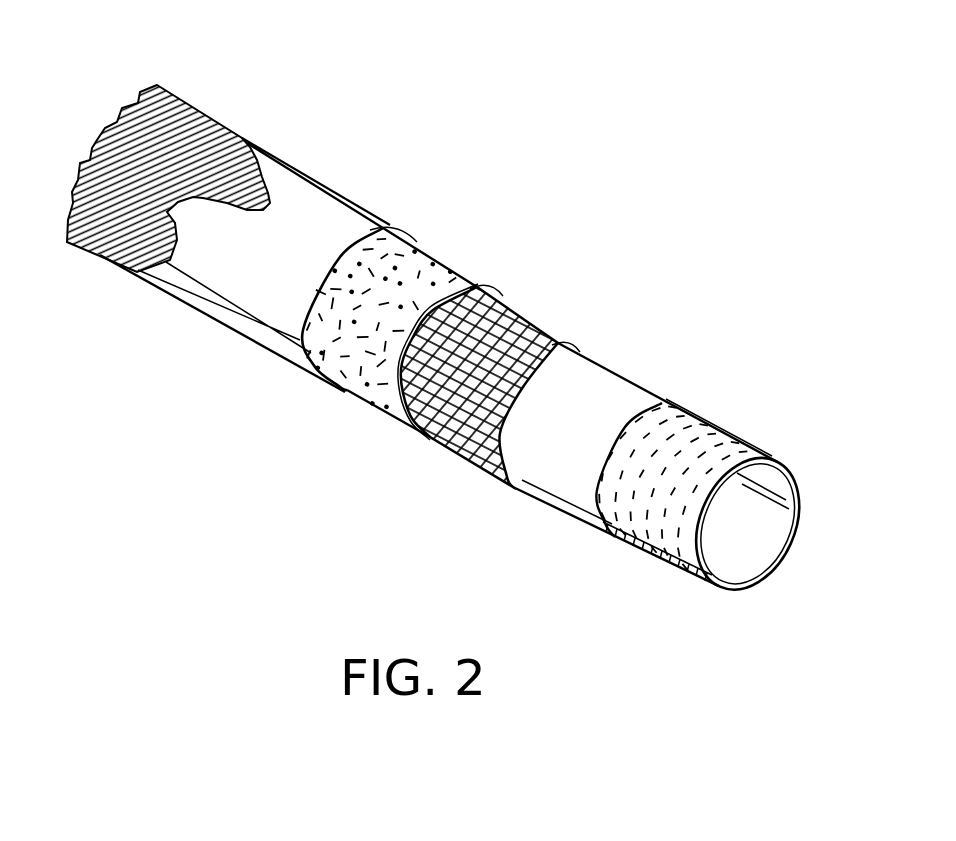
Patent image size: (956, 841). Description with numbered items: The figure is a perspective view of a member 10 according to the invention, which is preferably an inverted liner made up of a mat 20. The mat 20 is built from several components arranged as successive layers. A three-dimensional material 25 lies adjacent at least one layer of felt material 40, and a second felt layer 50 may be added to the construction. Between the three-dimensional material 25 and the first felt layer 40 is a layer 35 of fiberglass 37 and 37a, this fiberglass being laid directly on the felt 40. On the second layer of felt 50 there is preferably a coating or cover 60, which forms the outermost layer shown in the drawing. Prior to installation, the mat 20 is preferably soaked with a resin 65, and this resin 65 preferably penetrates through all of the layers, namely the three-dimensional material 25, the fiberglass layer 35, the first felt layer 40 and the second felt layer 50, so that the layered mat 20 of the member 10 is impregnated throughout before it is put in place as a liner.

The member 10 is at (585, 92).
The mat 20 is at (365, 421).
The three-dimensional material 25 is at (541, 312).
The layer of fiberglass 35 is at (437, 255).
The fiberglass 37 is at (424, 237).
The fiberglass 37a is at (452, 272).
The felt material 40 is at (291, 176).
The second felt layer 50 is at (560, 465).
The coating or cover 60 is at (725, 457).
The resin 65 is at (102, 242).